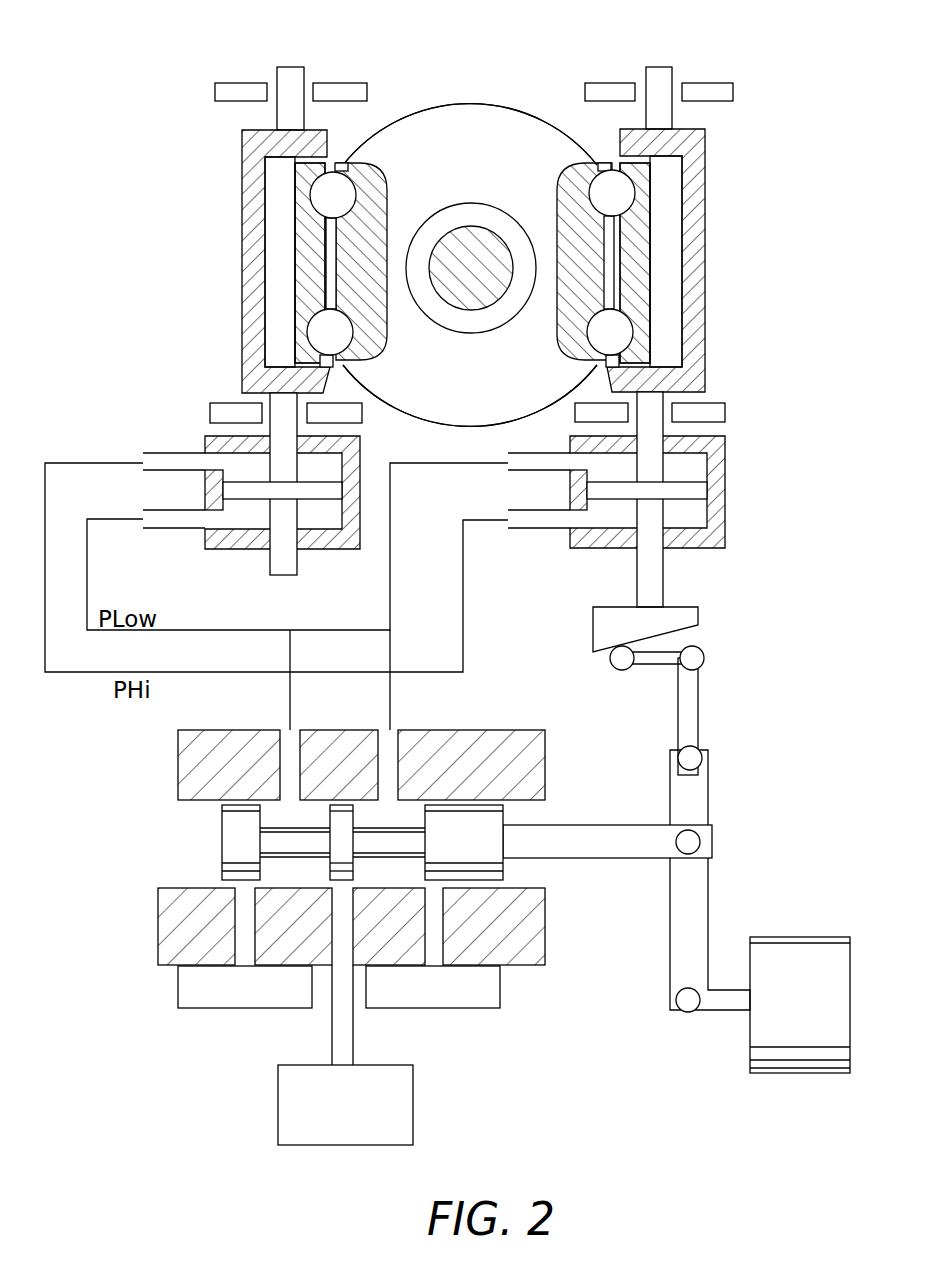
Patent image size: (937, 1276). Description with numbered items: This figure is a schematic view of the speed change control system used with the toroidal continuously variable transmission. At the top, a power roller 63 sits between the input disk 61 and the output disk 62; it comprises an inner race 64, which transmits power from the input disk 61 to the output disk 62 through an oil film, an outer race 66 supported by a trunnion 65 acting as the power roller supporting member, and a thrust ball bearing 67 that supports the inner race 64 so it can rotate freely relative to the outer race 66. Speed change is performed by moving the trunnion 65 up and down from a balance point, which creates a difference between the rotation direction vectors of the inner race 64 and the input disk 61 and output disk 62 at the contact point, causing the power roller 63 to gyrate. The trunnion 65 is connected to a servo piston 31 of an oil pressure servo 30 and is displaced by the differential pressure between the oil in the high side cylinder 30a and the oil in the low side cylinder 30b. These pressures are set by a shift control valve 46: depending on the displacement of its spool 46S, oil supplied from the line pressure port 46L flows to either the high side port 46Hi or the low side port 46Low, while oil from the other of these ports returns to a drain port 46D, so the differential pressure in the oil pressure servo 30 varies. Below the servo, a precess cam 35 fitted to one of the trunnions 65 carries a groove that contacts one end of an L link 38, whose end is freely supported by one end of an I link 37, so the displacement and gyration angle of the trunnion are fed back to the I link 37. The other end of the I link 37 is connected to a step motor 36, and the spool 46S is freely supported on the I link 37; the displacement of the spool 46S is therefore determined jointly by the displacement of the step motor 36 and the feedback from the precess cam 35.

The input disk 61 is at (505, 78).
The output disk 62 is at (470, 265).
The power roller 63 is at (284, 194).
The inner race 64 is at (270, 298).
The trunnion 65 is at (248, 268).
The outer race 66 is at (305, 285).
The thrust ball bearing 67 is at (325, 203).
The oil pressure servo 30 is at (427, 477).
The high side cylinder 30a is at (233, 472).
The low side cylinder 30b is at (232, 518).
The servo piston 31 is at (262, 495).
The precess cam 35 is at (688, 620).
The step motor 36 is at (797, 952).
The I link 37 is at (685, 912).
The L link 38 is at (697, 706).
The shift control valve 46 is at (361, 937).
The high side port 46Hi is at (288, 797).
The low side port 46Low is at (471, 765).
The spool 46S is at (495, 848).
The drain port 46D is at (349, 926).
The line pressure port 46L is at (293, 926).